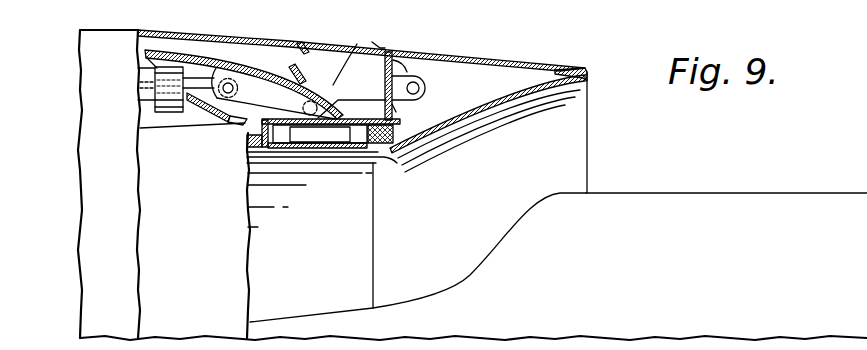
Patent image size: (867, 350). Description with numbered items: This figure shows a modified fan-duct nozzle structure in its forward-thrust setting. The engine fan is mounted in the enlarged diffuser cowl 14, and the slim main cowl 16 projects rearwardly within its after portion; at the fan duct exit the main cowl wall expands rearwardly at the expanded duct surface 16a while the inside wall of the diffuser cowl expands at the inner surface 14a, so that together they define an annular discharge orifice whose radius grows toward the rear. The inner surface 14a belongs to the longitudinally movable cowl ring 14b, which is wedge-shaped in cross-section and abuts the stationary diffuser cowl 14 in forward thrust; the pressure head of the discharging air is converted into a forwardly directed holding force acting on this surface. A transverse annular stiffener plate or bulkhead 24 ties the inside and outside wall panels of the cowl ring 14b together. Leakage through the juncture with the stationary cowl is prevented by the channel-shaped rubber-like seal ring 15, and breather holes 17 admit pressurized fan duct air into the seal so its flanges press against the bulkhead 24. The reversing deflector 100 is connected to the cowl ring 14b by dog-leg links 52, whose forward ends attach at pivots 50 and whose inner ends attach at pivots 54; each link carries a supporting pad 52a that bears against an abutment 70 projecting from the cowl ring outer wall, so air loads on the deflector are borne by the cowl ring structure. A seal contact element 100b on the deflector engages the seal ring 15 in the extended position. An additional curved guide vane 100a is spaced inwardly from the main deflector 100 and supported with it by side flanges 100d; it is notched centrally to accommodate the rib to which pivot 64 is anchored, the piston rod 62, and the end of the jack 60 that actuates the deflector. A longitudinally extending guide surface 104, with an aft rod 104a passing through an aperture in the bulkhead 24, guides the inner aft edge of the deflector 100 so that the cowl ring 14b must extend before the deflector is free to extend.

The diffuser cowl 14 is at (100, 47).
The inner surface of cowl ring 14a is at (476, 108).
The cowl ring 14b is at (509, 58).
The seal ring 15 is at (396, 159).
The main cowl 16 is at (678, 192).
The expanded duct surface 16a is at (538, 212).
The breather holes 17 is at (376, 146).
The stiffener plate 24 is at (396, 110).
The pivots 50 is at (303, 104).
The dog-leg links 52 is at (332, 82).
The supporting pad 52a is at (373, 42).
The pivots 54 is at (457, 58).
The jack 60 is at (147, 93).
The piston rod 62 is at (200, 77).
The pivot 64 is at (231, 81).
The abutment 70 is at (418, 78).
The reversing deflector 100 is at (270, 63).
The curved guide vane 100a is at (212, 113).
The seal contact element 100b is at (310, 72).
The side flanges 100d is at (242, 120).
The guide surface 104 is at (325, 122).
The rod 104a is at (401, 124).